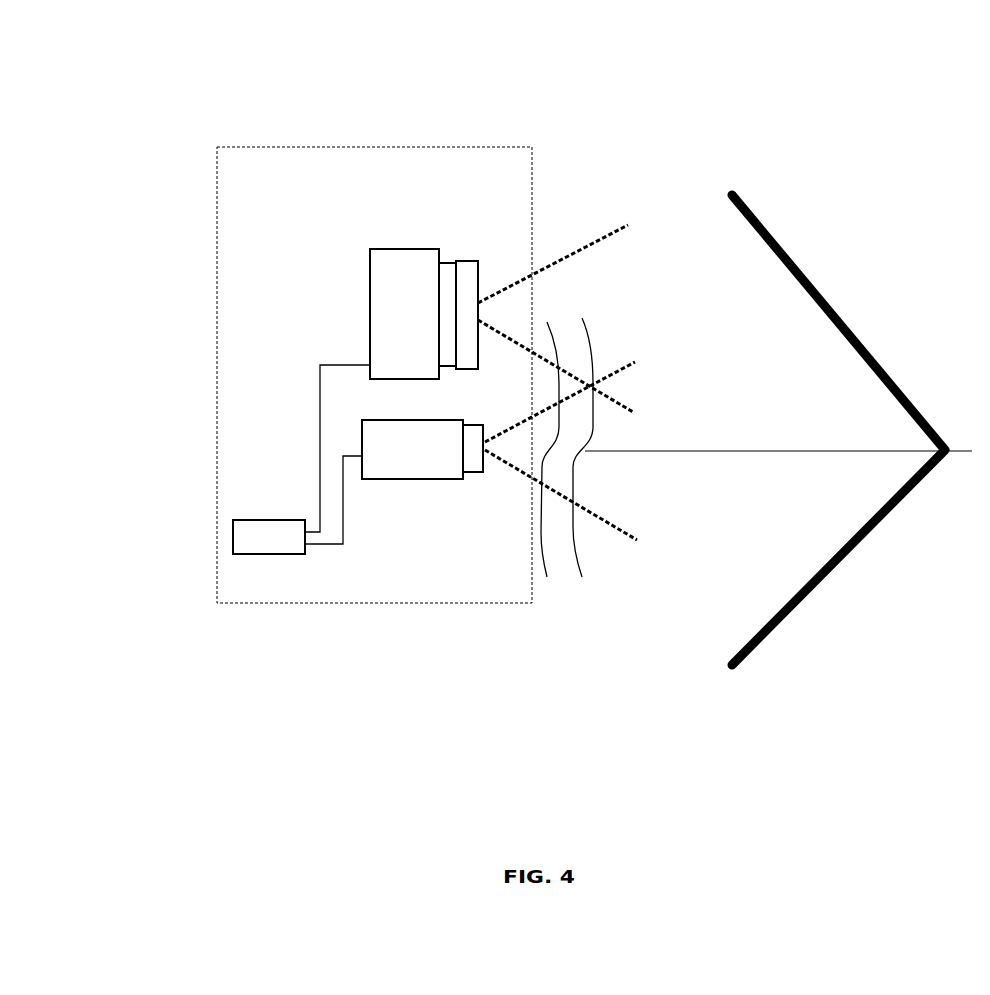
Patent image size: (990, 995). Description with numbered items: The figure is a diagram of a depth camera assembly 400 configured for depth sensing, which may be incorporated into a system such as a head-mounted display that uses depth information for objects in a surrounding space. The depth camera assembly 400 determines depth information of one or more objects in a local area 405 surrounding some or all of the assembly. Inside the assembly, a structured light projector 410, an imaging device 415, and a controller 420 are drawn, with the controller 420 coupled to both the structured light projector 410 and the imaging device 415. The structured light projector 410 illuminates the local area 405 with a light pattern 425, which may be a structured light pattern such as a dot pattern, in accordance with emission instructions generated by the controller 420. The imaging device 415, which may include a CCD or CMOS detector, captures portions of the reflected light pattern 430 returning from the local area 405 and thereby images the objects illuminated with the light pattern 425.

The depth camera assembly 400 is at (243, 147).
The local area 405 is at (808, 277).
The structured light projector 410 is at (406, 249).
The imaging device 415 is at (417, 479).
The controller 420 is at (252, 554).
The light pattern 425 is at (585, 238).
The reflected light pattern 430 is at (557, 493).